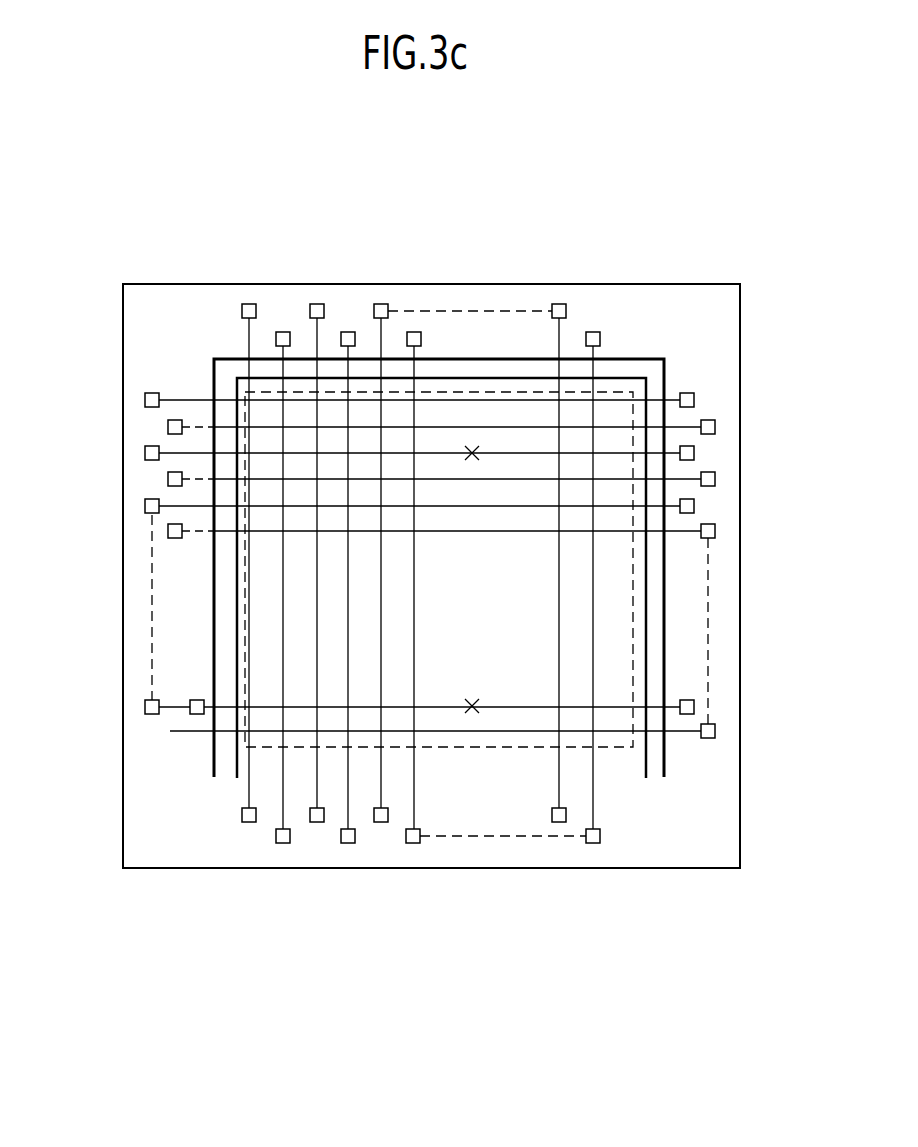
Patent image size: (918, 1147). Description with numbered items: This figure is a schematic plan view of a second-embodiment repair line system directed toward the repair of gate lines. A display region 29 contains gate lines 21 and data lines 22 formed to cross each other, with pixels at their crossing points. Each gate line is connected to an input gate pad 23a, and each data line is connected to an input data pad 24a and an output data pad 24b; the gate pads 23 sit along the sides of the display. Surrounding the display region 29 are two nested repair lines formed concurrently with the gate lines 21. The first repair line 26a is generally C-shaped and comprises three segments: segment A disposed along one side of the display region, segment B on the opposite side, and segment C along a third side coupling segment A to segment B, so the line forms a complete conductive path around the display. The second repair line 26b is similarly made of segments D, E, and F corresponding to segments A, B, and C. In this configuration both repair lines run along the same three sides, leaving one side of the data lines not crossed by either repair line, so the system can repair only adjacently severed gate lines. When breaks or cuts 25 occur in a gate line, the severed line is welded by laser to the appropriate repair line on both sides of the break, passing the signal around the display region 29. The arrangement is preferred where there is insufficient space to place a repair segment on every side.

The gate lines 21 is at (540, 453).
The data lines 22 is at (313, 683).
The gate pads 23 is at (168, 428).
The input gate pad 23a is at (715, 428).
The input data pad 24a is at (380, 822).
The output data pad 24b is at (559, 303).
The breaks or cuts 25 is at (472, 446).
The first repair line 26a is at (212, 373).
The second repair line 26b is at (646, 617).
The display region 29 is at (635, 573).
The segment A is at (212, 762).
The segment B is at (663, 762).
The segment C is at (218, 356).
The segment D is at (237, 592).
The segment E is at (646, 658).
The segment F is at (634, 376).